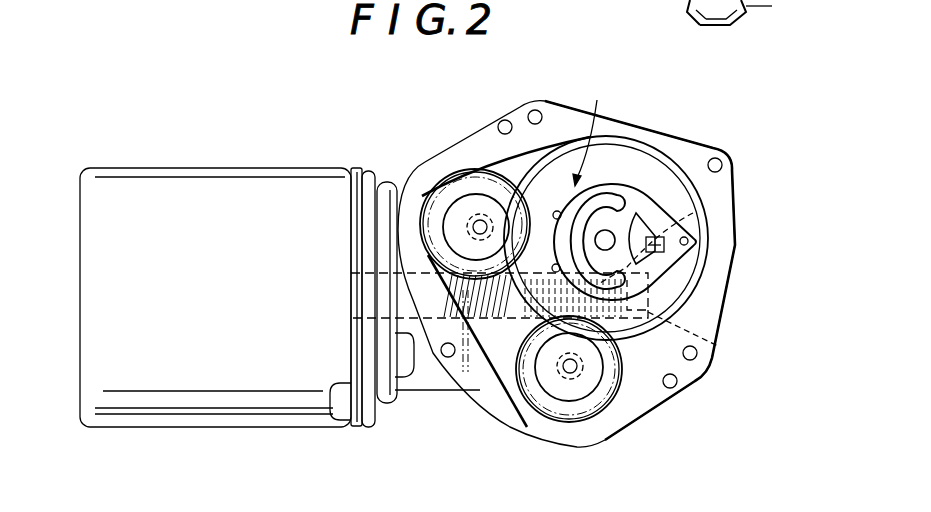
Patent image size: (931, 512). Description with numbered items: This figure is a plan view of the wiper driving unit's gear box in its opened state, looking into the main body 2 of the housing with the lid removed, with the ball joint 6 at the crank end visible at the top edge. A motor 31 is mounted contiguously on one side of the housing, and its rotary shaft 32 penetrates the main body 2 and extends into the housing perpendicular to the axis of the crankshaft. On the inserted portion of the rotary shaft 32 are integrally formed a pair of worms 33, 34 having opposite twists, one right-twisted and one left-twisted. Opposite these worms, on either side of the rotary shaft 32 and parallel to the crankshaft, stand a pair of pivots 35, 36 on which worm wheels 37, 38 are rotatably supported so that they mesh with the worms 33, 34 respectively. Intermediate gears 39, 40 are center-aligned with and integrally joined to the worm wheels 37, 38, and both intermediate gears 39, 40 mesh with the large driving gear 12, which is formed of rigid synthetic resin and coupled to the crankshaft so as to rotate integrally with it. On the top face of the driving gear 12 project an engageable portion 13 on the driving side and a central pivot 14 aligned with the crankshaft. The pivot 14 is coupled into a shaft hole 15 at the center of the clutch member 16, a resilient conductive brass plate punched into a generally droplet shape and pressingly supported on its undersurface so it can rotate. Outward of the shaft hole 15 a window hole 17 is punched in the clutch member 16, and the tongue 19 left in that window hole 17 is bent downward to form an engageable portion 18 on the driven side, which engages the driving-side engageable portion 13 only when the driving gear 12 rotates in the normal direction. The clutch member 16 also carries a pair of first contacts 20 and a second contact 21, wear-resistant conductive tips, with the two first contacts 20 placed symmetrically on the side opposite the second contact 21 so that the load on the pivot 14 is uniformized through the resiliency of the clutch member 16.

The main body 2 is at (705, 148).
The ball joint 6 is at (688, 8).
The driving gear 12 is at (655, 160).
The engageable portion on the driving side 13 is at (660, 250).
The pivot 14 is at (612, 233).
The shaft hole 15 is at (602, 229).
The clutch member 16 is at (593, 128).
The window hole 17 is at (611, 192).
The engageable portion on the driven side 18 is at (693, 213).
The tongue 19 is at (650, 258).
The first contacts 20 is at (554, 212).
The second contact 21 is at (690, 241).
The motor 31 is at (242, 192).
The rotary shaft 32 is at (358, 303).
The worm 33 is at (493, 357).
The worm 34 is at (718, 346).
The pivot 35 is at (433, 187).
The pivot 36 is at (565, 380).
The worm wheel 37 is at (452, 187).
The worm wheel 38 is at (595, 410).
The intermediate gear 39 is at (482, 194).
The intermediate gear 40 is at (548, 385).